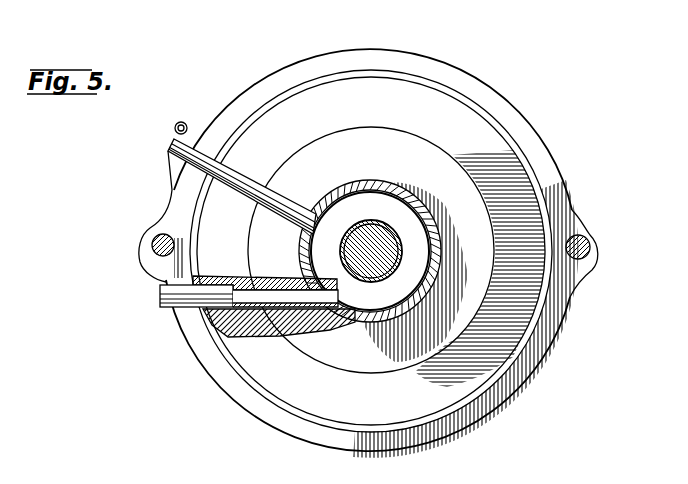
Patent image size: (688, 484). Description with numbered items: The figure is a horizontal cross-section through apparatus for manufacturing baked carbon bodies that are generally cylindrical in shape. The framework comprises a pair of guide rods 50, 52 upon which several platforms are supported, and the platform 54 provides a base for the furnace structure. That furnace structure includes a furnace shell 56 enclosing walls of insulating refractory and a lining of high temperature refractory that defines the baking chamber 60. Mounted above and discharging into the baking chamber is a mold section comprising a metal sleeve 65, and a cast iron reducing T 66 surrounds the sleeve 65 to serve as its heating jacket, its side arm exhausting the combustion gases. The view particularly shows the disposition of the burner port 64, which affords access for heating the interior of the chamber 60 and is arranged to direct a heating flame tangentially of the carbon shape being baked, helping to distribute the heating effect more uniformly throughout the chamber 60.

The guide rod 50 is at (586, 242).
The guide rod 52 is at (152, 238).
The platform 54 is at (540, 127).
The furnace shell 56 is at (404, 73).
The baking chamber 60 is at (372, 206).
The burner port 64 is at (183, 295).
The metal sleeve 65 is at (371, 283).
The cast iron reducing T 66 is at (410, 153).